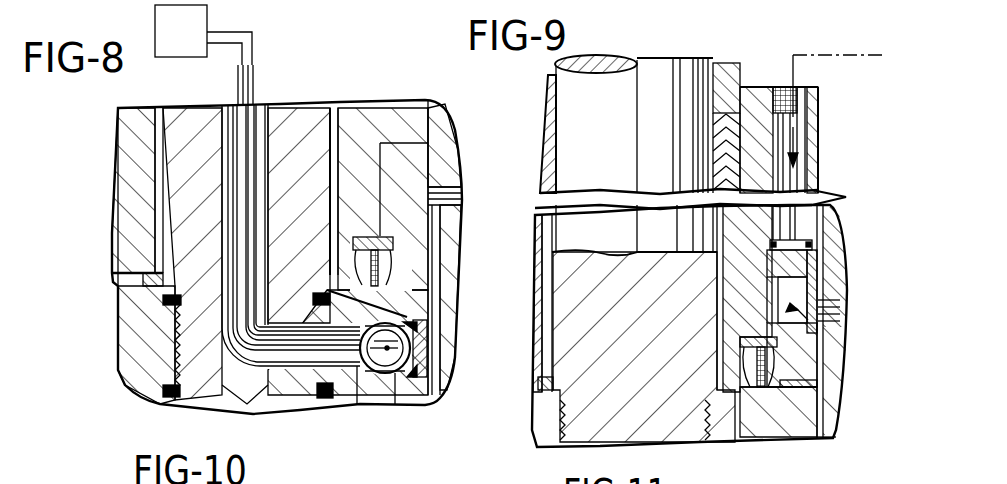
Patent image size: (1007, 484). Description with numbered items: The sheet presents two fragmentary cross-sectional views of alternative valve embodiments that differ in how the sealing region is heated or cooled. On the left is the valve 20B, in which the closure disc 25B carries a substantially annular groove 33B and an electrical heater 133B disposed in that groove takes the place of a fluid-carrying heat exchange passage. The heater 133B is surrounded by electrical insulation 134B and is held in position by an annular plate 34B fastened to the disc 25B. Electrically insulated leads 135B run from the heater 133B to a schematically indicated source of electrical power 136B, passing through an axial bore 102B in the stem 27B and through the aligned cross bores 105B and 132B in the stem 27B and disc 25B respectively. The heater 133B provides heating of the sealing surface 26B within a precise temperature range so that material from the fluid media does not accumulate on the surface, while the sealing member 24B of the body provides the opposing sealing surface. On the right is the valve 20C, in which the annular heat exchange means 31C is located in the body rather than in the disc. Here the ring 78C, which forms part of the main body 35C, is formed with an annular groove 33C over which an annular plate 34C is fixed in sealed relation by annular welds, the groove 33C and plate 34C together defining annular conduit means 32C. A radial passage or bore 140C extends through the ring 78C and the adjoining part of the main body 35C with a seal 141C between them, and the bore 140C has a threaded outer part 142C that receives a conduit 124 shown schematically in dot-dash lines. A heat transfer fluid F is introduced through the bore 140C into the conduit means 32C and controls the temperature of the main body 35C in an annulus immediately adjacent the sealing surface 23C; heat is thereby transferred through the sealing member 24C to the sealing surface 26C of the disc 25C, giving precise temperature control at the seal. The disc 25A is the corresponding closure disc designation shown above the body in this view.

In FIG. 8, the valve 20B is at (116, 136).
In FIG. 8, the stem 27B is at (165, 214).
In FIG. 8, the axial bore 102B is at (228, 178).
In FIG. 8, the source of electrical power 136B is at (180, 52).
In FIG. 8, the electrically insulated leads 135B is at (250, 125).
In FIG. 8, the sealing member 24B is at (350, 245).
In FIG. 8, the sealing surface 26B is at (385, 272).
In FIG. 8, the annular plate 34B is at (412, 347).
In FIG. 8, the electrical insulation 134B is at (405, 328).
In FIG. 8, the electrical heater 133B is at (405, 370).
In FIG. 8, the cross bore 105B is at (285, 408).
In FIG. 8, the disc 25B is at (342, 398).
In FIG. 8, the cross bore 132B is at (357, 406).
In FIG. 8, the annular groove 33B is at (395, 378).
In FIG. 9, the valve 20C is at (533, 108).
In FIG. 9, the disc 25A is at (654, 126).
In FIG. 9, the conduit 124 is at (868, 56).
In FIG. 9, the threaded outer part 142C is at (806, 105).
In FIG. 9, the main body 35C is at (826, 136).
In FIG. 9, the heat transfer fluid F is at (802, 150).
In FIG. 9, the radial passage or bore 140C is at (846, 197).
In FIG. 9, the seal 141C is at (797, 220).
In FIG. 9, the annular groove 33C is at (810, 262).
In FIG. 9, the annular heat exchange means 31C is at (822, 294).
In FIG. 9, the annular plate 34C is at (818, 302).
In FIG. 9, the annular conduit means 32C is at (815, 325).
In FIG. 9, the ring 78C is at (812, 360).
In FIG. 9, the sealing surface 26C is at (783, 394).
In FIG. 9, the disc 25C is at (802, 442).
In FIG. 9, the sealing surface 23C is at (750, 403).
In FIG. 9, the sealing member 24C is at (750, 378).